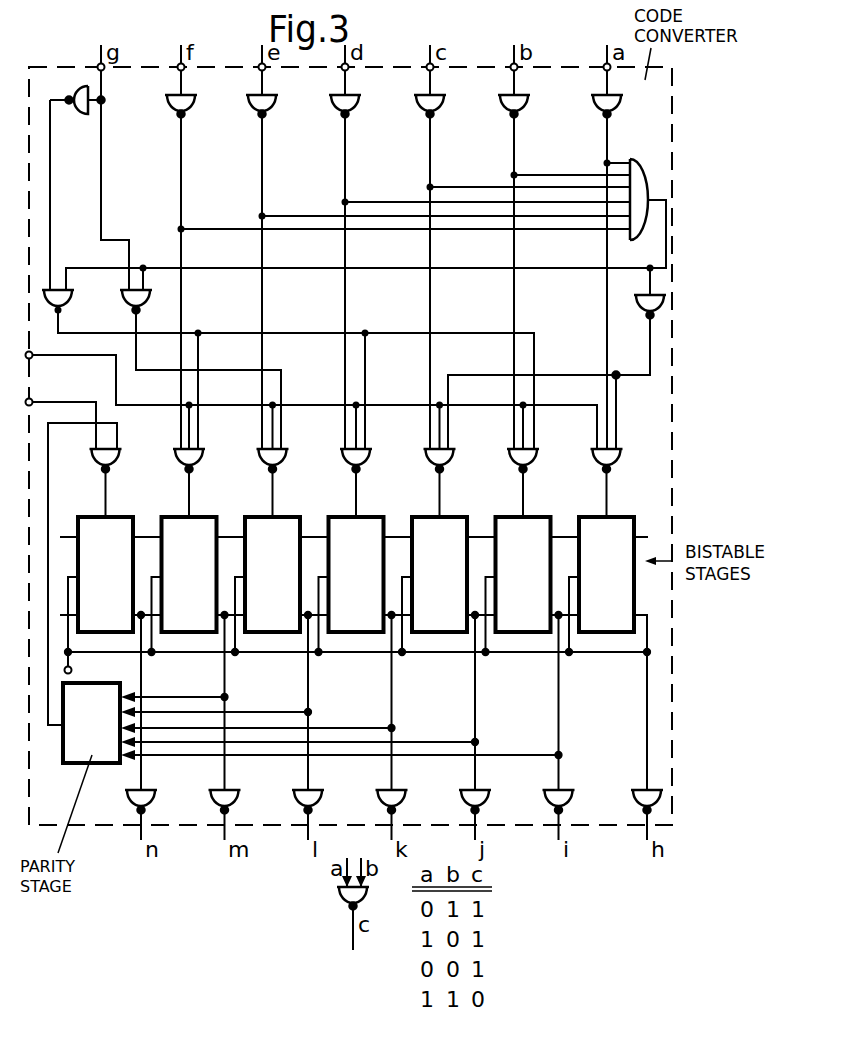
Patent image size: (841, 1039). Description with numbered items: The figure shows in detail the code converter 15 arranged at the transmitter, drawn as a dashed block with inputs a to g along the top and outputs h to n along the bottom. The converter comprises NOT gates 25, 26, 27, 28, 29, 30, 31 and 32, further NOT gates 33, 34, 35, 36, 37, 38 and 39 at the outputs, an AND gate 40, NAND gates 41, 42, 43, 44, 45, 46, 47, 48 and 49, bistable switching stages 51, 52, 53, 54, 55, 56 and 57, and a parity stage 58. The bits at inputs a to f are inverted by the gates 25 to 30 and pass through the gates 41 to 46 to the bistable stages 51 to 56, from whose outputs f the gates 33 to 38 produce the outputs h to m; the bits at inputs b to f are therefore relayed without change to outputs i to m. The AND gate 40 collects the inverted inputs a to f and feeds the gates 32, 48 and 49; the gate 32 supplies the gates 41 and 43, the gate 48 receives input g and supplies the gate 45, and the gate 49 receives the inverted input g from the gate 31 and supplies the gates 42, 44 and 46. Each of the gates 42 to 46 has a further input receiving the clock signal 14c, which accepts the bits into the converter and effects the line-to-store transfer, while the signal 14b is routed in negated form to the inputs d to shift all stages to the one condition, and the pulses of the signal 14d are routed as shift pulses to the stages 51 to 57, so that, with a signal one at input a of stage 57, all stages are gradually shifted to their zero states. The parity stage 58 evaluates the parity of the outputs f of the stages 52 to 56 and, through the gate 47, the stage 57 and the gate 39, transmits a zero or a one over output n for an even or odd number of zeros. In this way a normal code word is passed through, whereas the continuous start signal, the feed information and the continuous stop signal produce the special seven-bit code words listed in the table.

The code converter 15 is at (228, 70).
The NOT gate 25 is at (594, 103).
The NOT gate 26 is at (501, 103).
The NOT gate 27 is at (417, 103).
The NOT gate 28 is at (332, 103).
The NOT gate 29 is at (249, 103).
The NOT gate 30 is at (168, 103).
The NOT gate 31 is at (77, 117).
The NOT gate 32 is at (557, 358).
The NOT gate 33 is at (634, 812).
The NOT gate 34 is at (546, 812).
The NOT gate 35 is at (462, 812).
The NOT gate 36 is at (379, 812).
The NOT gate 37 is at (295, 812).
The NOT gate 38 is at (212, 812).
The NOT gate 39 is at (128, 812).
The AND gate 40 is at (366, 211).
The NAND gate 41 is at (594, 480).
The NAND gate 42 is at (510, 480).
The NAND gate 43 is at (427, 480).
The NAND gate 44 is at (343, 480).
The NAND gate 45 is at (260, 480).
The NAND gate 46 is at (176, 480).
The NAND gate 47 is at (93, 480).
The NAND gate 48 is at (200, 358).
The NAND gate 49 is at (288, 274).
The bistable switching stage 51 is at (608, 639).
The bistable switching stage 52 is at (530, 639).
The bistable switching stage 53 is at (447, 639).
The bistable switching stage 54 is at (363, 639).
The bistable switching stage 55 is at (280, 639).
The bistable switching stage 56 is at (196, 639).
The bistable switching stage 57 is at (110, 639).
The parity stage 58 is at (298, 725).
The clock signal 14b is at (61, 412).
The clock signal 14c is at (312, 388).
The clock signal 14d is at (85, 668).